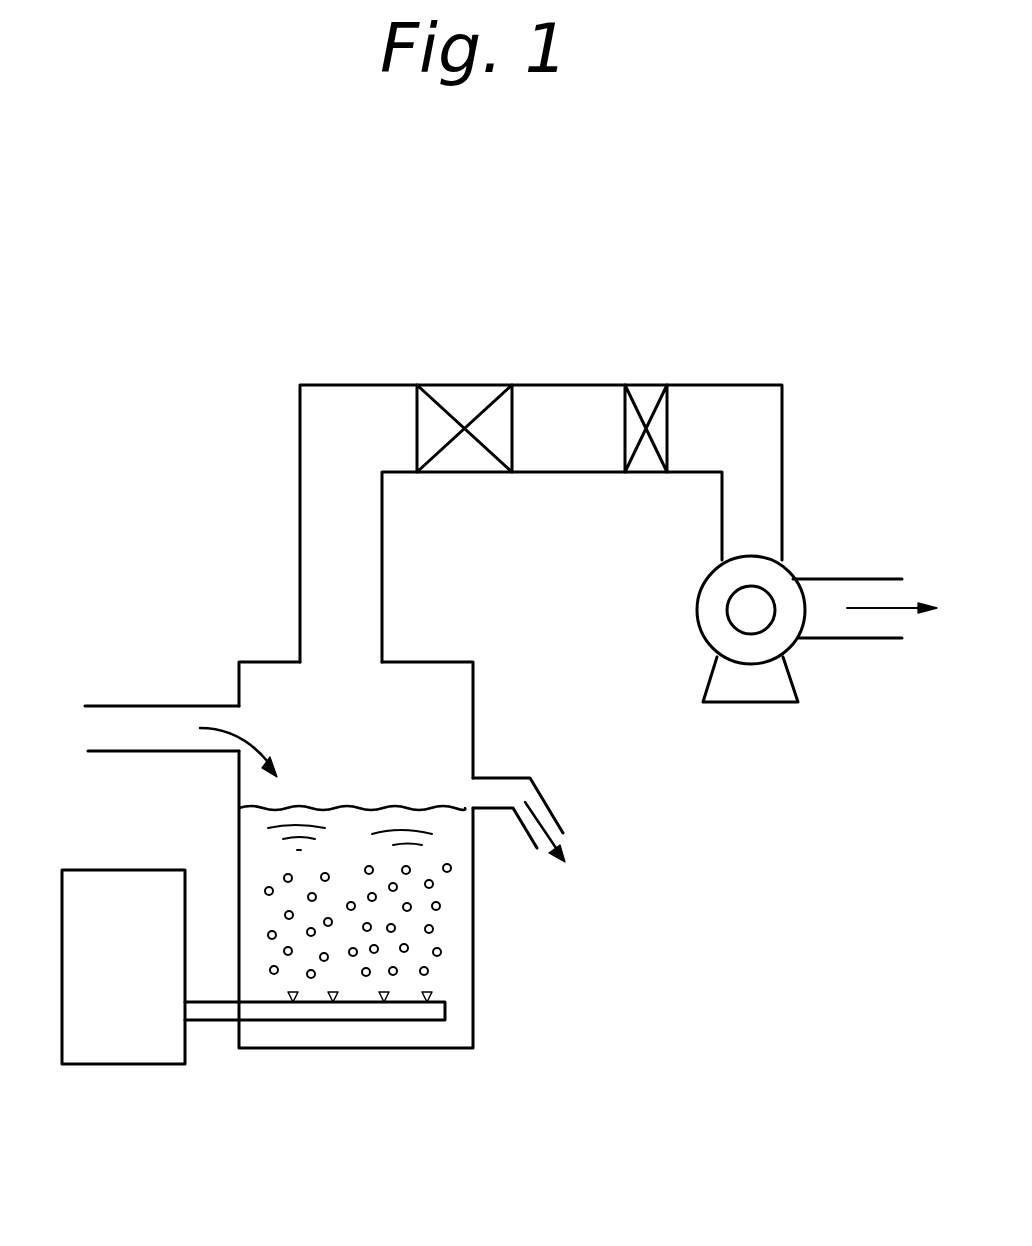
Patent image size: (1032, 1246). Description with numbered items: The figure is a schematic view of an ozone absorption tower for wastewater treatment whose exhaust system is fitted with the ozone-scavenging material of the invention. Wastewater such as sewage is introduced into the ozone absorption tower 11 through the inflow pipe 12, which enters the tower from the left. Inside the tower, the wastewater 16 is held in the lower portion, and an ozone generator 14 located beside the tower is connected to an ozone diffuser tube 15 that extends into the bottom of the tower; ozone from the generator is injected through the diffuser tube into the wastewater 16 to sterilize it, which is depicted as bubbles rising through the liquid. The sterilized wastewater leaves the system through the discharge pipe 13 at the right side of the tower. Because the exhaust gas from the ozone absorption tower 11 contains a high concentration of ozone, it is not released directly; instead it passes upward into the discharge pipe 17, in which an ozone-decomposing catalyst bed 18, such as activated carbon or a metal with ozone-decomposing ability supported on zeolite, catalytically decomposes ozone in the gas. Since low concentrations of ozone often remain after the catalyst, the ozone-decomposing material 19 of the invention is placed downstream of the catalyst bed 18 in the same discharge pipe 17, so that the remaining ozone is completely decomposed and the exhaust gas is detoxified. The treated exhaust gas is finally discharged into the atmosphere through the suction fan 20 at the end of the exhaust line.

The ozone absorption tower 11 is at (483, 683).
The inflow pipe 12 is at (157, 705).
The discharge pipe 13 is at (550, 795).
The ozone generator 14 is at (130, 1050).
The ozone diffuser tube 15 is at (415, 1013).
The wastewater 16 is at (462, 903).
The discharge pipe 17 is at (347, 395).
The ozone-decomposing catalyst bed 18 is at (465, 395).
The ozone-decomposing material 19 is at (647, 395).
The suction fan 20 is at (783, 588).